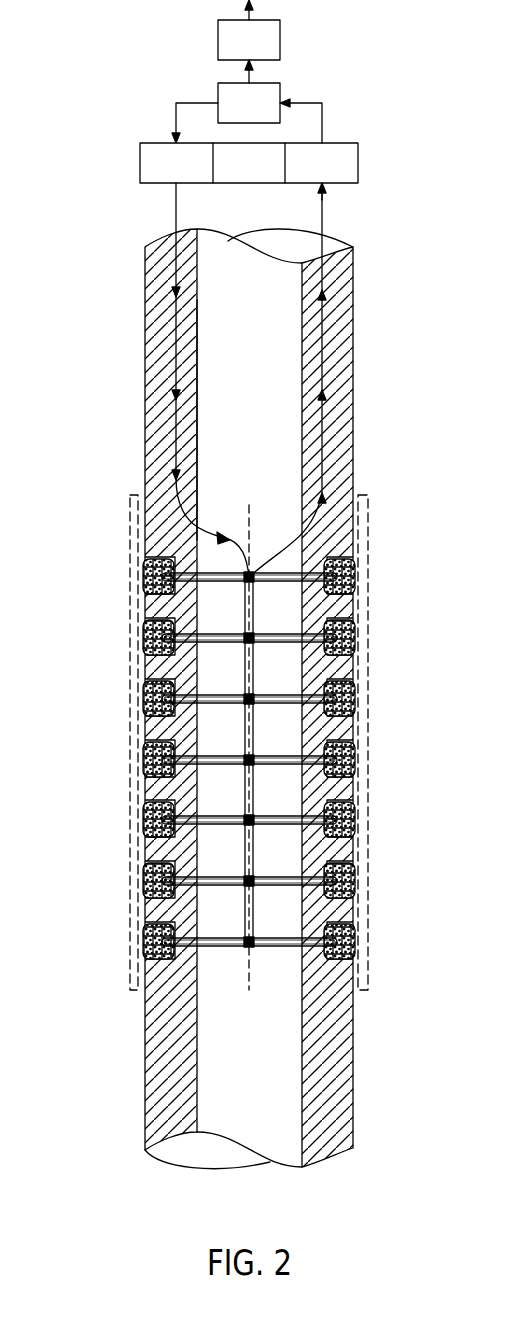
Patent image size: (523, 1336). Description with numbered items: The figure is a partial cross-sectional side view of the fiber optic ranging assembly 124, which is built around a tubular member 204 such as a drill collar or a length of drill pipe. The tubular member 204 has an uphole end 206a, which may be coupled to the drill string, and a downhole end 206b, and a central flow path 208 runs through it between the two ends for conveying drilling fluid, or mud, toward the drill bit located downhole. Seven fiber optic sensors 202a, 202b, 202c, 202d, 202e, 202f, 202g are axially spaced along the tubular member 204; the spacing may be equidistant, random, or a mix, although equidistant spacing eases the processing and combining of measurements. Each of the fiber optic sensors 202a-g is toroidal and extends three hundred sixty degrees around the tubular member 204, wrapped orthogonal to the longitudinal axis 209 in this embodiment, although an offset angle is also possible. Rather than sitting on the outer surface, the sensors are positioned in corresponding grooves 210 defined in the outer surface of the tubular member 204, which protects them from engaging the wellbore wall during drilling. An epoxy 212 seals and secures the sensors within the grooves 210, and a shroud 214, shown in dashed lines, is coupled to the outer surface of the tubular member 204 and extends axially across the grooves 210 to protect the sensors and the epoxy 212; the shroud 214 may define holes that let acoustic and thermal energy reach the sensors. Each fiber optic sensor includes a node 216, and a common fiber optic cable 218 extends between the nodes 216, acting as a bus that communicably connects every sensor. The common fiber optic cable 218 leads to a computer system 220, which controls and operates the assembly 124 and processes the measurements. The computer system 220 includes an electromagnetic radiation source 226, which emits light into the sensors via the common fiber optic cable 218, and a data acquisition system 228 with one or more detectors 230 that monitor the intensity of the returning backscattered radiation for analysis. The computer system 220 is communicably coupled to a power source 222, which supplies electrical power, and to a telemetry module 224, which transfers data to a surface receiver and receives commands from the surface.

The fiber optic ranging assembly 124 is at (72, 284).
The fiber optic sensor 202a is at (353, 569).
The fiber optic sensor 202b is at (353, 630).
The fiber optic sensor 202c is at (353, 691).
The fiber optic sensor 202d is at (353, 752).
The fiber optic sensor 202e is at (353, 812).
The fiber optic sensor 202f is at (353, 873).
The fiber optic sensor 202g is at (353, 934).
The tubular member 204 is at (145, 372).
The uphole end 206a is at (398, 282).
The downhole end 206b is at (398, 1132).
The central flow path 208 is at (199, 288).
The longitudinal axis 209 is at (250, 968).
The grooves 210 is at (148, 590).
The epoxy 212 is at (143, 565).
The shroud 214 is at (130, 513).
The node 216 is at (254, 579).
The common fiber optic cable 218 is at (302, 358).
The computer system 220 is at (358, 145).
The power source 222 is at (266, 116).
The telemetry module 224 is at (266, 53).
The electromagnetic radiation source 226 is at (193, 176).
The data acquisition system 228 is at (339, 176).
The detector 230 is at (266, 176).